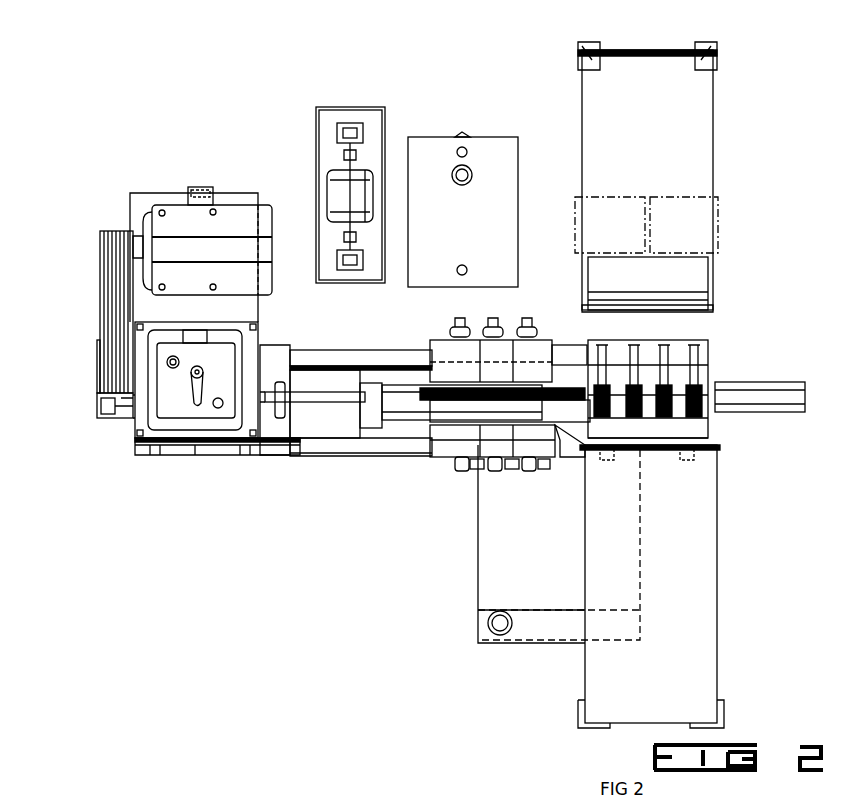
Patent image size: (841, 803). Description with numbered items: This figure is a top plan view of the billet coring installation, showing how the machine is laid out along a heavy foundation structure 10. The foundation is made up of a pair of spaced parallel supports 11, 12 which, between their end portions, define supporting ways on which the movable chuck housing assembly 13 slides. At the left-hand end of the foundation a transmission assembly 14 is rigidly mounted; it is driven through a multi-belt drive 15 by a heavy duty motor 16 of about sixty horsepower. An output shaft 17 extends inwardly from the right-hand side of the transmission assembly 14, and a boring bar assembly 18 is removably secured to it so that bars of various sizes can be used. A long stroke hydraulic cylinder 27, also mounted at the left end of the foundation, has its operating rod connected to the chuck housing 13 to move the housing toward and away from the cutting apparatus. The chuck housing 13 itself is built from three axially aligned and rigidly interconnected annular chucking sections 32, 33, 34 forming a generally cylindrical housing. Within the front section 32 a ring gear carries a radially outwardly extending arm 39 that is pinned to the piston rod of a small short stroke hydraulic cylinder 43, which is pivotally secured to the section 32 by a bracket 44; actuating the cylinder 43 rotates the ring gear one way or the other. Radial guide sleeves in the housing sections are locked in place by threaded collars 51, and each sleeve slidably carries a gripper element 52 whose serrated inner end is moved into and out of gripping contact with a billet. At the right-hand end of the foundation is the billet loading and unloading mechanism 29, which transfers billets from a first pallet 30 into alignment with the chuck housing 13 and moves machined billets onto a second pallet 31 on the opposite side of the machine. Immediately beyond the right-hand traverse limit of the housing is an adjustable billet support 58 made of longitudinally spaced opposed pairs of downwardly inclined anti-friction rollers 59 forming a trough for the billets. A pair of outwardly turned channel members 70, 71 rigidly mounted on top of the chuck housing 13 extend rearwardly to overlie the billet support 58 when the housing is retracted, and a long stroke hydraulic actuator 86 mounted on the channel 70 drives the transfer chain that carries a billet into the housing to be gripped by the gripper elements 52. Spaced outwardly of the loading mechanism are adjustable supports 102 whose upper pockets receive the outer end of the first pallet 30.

The foundation structure 10 is at (285, 340).
The support 11 is at (314, 348).
The support 12 is at (302, 455).
The chuck housing assembly 13 is at (465, 369).
The transmission assembly 14 is at (226, 383).
The multi-belt drive 15 is at (105, 268).
The motor 16 is at (236, 212).
The output shaft 17 is at (273, 391).
The boring bar assembly 18 is at (318, 392).
The long stroke hydraulic cylinder 27 is at (106, 418).
The billet loading and unloading mechanism 29 is at (648, 427).
The first pallet 30 is at (708, 126).
The second pallet 31 is at (700, 572).
The front annular chucking section 32 is at (448, 336).
The annular chucking section 33 is at (496, 333).
The annular chucking section 34 is at (532, 333).
The arm 39 is at (540, 470).
The short stroke hydraulic cylinder 43 is at (498, 470).
The bracket 44 is at (550, 466).
The threaded collar 51 is at (445, 335).
The gripper element 52 is at (458, 468).
The adjustable billet support 58 is at (708, 342).
The anti-friction rollers 59 is at (708, 372).
The channel member 70 is at (756, 414).
The channel member 71 is at (756, 384).
The long stroke hydraulic actuator 86 is at (586, 462).
The adjustable supports 102 is at (595, 45).